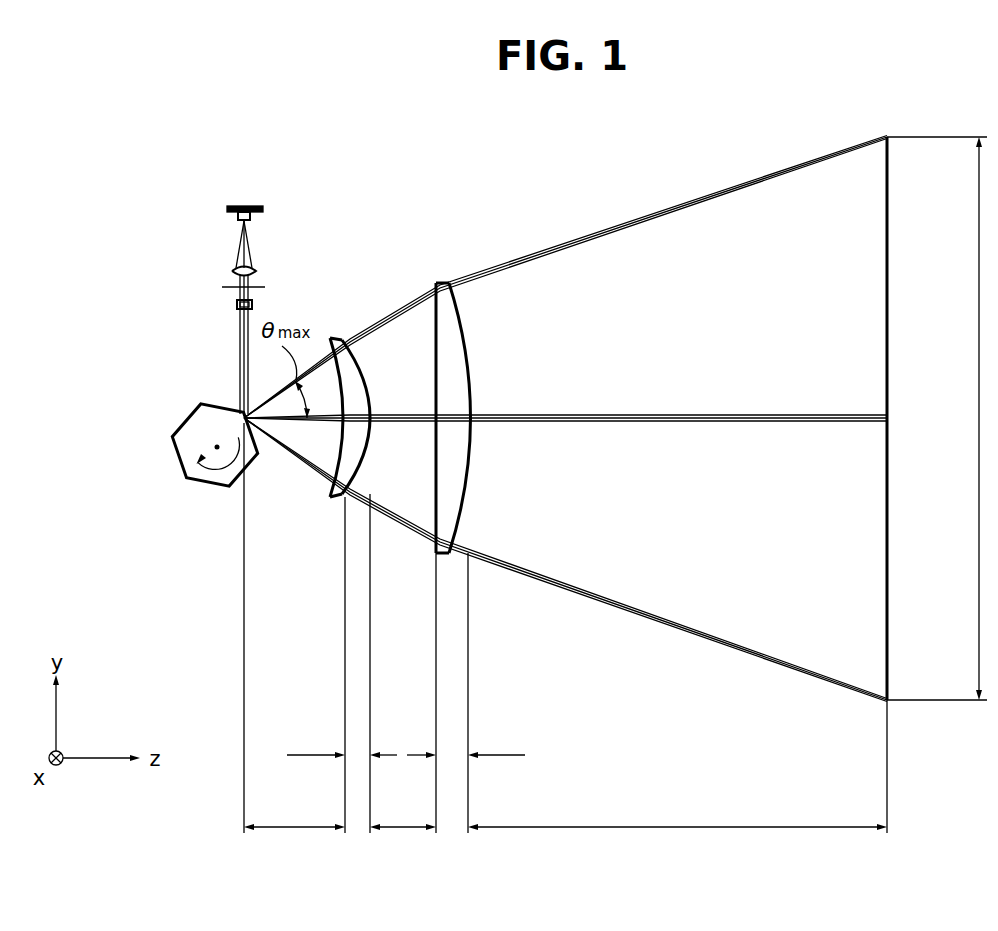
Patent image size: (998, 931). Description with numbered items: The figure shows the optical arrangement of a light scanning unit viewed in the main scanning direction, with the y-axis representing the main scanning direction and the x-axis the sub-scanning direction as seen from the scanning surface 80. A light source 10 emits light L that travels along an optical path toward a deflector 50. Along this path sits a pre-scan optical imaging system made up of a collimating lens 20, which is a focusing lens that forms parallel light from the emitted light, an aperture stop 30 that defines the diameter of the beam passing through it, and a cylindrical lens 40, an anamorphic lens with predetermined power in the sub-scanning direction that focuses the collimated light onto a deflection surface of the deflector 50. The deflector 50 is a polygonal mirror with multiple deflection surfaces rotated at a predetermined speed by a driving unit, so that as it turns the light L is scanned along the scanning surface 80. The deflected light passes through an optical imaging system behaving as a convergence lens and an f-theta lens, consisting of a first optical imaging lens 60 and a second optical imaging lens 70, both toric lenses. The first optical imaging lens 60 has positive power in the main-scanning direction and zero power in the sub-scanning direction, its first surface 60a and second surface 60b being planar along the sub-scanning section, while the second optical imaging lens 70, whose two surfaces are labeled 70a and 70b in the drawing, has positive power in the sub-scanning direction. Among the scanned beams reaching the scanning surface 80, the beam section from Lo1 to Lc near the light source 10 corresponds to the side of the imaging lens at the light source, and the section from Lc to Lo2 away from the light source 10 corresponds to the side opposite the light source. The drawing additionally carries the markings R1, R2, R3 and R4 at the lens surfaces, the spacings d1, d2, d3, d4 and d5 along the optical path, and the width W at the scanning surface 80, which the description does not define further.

The light source 10 is at (238, 215).
The collimating lens 20 is at (232, 271).
The aperture stop 30 is at (263, 287).
The cylindrical lens 40 is at (237, 304).
The deflector 50 is at (190, 420).
The first optical imaging lens 60 is at (342, 420).
The first surface of the first optical imaging lens 60a is at (307, 392).
The second surface of the first optical imaging lens 60b is at (378, 387).
The second optical imaging lens 70 is at (466, 439).
The incident surface of second lens 70a is at (411, 393).
The exit surface of second lens 70b is at (498, 418).
The scanning surface 80 is at (889, 283).
The radius of curvature of surface 60a R1 is at (342, 432).
The radius of curvature of surface 60b R2 is at (370, 428).
The radius of curvature of surface 70a R3 is at (436, 412).
The radius of curvature of surface 70b R4 is at (470, 412).
The light L is at (238, 362).
The central light beam Lc is at (642, 416).
The light beam near the light source Lo1 is at (575, 243).
The light beam away from the light source Lo2 is at (657, 616).
The scan width on screen W is at (937, 418).
The distance from mirror to first lens d1 is at (294, 842).
The thickness of first lens d2 is at (342, 740).
The distance between lenses d3 is at (403, 842).
The thickness of second lens d4 is at (466, 740).
The distance from second lens to screen d5 is at (677, 842).